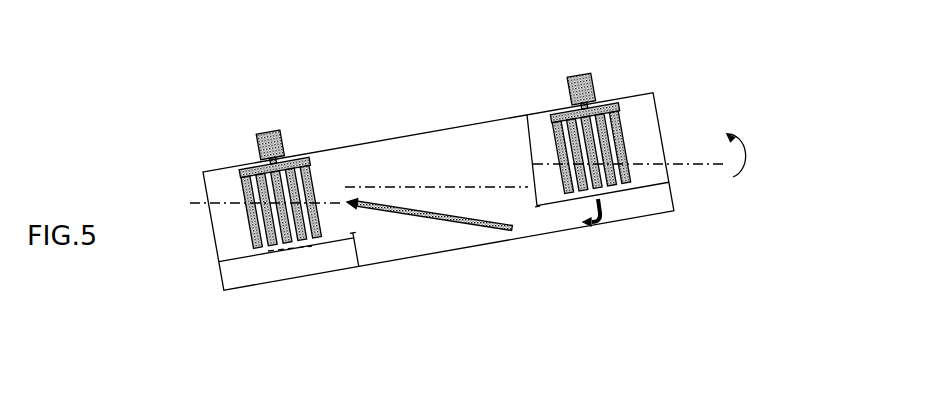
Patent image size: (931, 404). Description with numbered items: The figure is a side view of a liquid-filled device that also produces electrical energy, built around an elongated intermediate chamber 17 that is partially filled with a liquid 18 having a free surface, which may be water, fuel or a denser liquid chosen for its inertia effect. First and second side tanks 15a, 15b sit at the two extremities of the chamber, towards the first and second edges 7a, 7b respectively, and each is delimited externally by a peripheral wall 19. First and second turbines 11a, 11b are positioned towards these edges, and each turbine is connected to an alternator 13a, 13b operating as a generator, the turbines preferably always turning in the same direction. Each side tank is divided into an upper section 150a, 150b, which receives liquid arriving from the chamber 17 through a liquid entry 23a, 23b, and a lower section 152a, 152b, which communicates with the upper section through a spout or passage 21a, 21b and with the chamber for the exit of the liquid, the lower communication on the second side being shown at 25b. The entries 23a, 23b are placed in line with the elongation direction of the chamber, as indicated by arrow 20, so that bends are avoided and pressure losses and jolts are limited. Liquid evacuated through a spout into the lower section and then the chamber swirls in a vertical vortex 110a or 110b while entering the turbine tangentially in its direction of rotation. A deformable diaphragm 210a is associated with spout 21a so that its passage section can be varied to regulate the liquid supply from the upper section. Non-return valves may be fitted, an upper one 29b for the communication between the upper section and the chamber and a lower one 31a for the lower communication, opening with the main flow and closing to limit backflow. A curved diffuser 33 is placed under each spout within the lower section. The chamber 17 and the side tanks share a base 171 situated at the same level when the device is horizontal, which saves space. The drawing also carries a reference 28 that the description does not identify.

The first edge 7a is at (213, 238).
The second edge 7b is at (668, 148).
The first turbine 11a is at (311, 150).
The second turbine 11b is at (533, 138).
The alternator 13a is at (258, 128).
The alternator 13b is at (603, 83).
The first side tank 15a is at (220, 166).
The second side tank 15b is at (635, 93).
The intermediate chamber 17 is at (430, 153).
The liquid 18 is at (434, 243).
The peripheral wall 19 is at (365, 143).
The arrow 20 is at (472, 232).
The spout 21a is at (318, 255).
The spout 21b is at (585, 200).
The liquid entry 23a is at (346, 195).
The liquid entry 23b is at (530, 163).
The liquid exit 25b is at (534, 234).
The displacement direction 28 is at (648, 192).
The non-return valve 29b is at (527, 115).
The non-return valve 31a is at (357, 253).
The diffuser 33 is at (277, 250).
The vertical vortex 110a is at (270, 128).
The vertical vortex 110b is at (580, 74).
The upper section 150a is at (205, 184).
The upper section 150b is at (657, 138).
The lower section 152a is at (233, 278).
The lower section 152b is at (663, 202).
The base 171 is at (660, 213).
The deformable diaphragm 210a is at (300, 252).